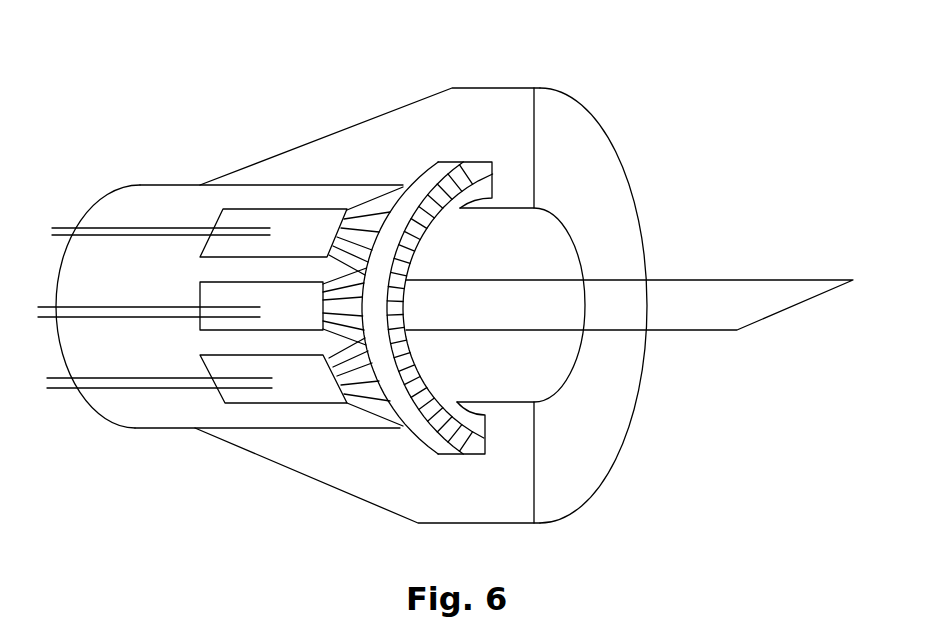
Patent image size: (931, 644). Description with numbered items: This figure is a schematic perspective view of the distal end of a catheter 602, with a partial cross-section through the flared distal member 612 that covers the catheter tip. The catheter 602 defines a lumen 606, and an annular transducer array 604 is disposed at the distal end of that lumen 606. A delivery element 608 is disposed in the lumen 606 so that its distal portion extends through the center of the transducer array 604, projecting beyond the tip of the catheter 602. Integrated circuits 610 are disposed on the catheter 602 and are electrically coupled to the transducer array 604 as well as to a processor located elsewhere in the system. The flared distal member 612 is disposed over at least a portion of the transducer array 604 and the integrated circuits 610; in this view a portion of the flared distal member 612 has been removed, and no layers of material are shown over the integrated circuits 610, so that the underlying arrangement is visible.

The catheter 602 is at (72, 154).
The annular transducer array 604 is at (408, 197).
The lumen 606 is at (584, 400).
The delivery element 608 is at (735, 280).
The integrated circuits 610 is at (237, 218).
The flared distal member 612 is at (469, 108).